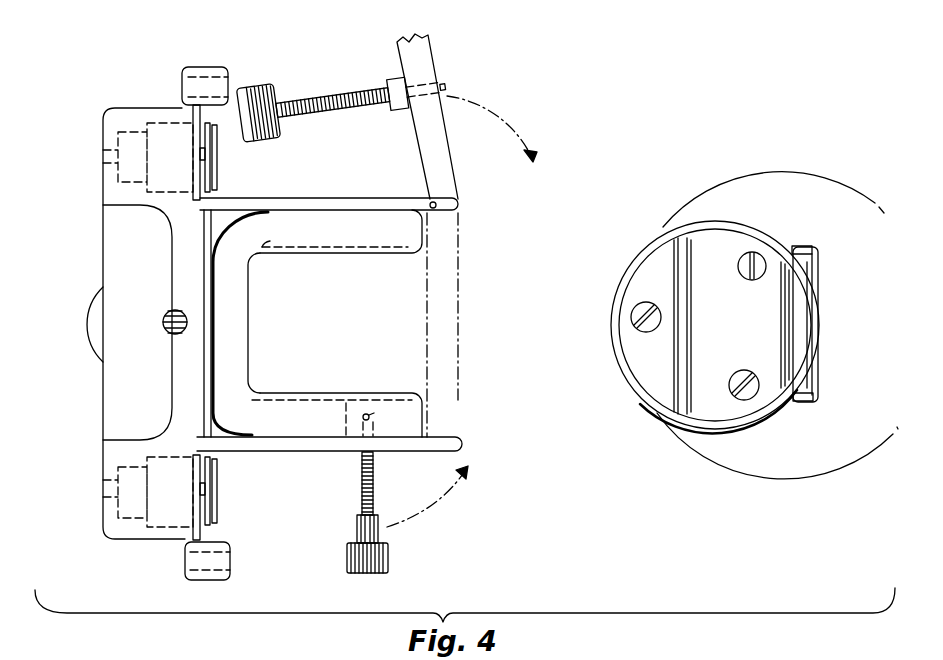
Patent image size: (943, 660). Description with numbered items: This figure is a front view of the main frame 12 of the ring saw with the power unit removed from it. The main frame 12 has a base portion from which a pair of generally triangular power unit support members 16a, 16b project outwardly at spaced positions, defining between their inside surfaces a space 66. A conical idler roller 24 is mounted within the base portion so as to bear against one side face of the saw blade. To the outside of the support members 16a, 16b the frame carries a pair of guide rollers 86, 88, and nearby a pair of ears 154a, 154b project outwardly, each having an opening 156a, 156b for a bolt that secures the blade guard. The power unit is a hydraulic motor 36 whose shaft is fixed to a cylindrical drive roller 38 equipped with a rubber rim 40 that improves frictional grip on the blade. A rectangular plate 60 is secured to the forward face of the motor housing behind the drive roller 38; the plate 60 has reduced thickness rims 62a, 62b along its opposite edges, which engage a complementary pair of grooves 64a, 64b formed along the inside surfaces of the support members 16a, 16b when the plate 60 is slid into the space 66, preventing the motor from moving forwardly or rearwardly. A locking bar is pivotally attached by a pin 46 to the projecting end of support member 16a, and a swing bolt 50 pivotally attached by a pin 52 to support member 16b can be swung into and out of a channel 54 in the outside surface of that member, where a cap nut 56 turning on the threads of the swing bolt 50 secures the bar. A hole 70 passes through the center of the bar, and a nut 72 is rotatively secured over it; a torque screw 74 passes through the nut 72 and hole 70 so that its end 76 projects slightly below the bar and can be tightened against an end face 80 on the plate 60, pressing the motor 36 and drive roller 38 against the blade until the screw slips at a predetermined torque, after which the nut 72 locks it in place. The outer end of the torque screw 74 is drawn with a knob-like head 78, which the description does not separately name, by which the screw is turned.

The main frame 12 is at (100, 117).
The power unit support member 16a is at (287, 207).
The power unit support member 16b is at (298, 440).
The conical idler roller 24 is at (97, 297).
The hydraulic motor 36 is at (748, 178).
The cylindrical drive roller 38 is at (747, 337).
The rim 40 is at (618, 355).
The pin 46 is at (433, 203).
The swing bolt 50 is at (375, 492).
The pin 52 is at (373, 417).
The channel 54 is at (347, 443).
The cap nut 56 is at (388, 560).
The rectangular plate 60 is at (810, 268).
The reduced thickness rim 62a is at (815, 225).
The reduced thickness rim 62b is at (793, 400).
The groove 64a is at (345, 247).
The groove 64b is at (303, 393).
The space 66 is at (251, 325).
The hole 70 is at (425, 90).
The nut 72 is at (395, 80).
The torque screw 74 is at (310, 113).
The end 76 is at (443, 83).
The thumb knob 78 is at (255, 103).
The end face 80 is at (813, 370).
The guide roller 86 is at (218, 165).
The guide roller 88 is at (220, 507).
The ear 154a is at (188, 65).
The ear 154b is at (187, 573).
The opening 156a is at (192, 78).
The opening 156b is at (220, 572).